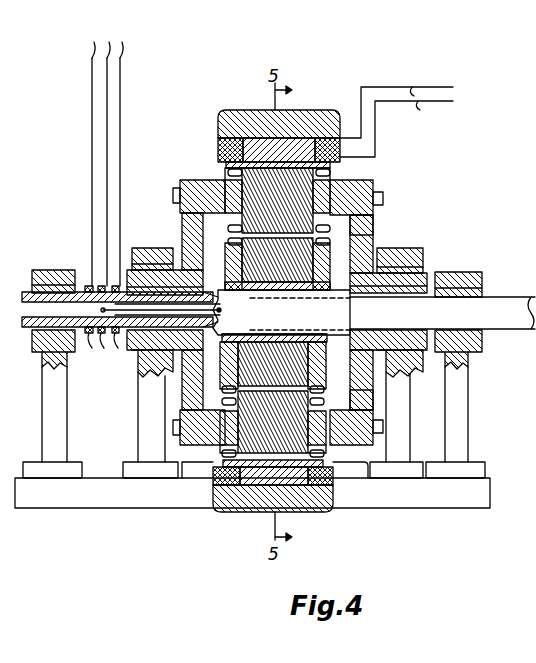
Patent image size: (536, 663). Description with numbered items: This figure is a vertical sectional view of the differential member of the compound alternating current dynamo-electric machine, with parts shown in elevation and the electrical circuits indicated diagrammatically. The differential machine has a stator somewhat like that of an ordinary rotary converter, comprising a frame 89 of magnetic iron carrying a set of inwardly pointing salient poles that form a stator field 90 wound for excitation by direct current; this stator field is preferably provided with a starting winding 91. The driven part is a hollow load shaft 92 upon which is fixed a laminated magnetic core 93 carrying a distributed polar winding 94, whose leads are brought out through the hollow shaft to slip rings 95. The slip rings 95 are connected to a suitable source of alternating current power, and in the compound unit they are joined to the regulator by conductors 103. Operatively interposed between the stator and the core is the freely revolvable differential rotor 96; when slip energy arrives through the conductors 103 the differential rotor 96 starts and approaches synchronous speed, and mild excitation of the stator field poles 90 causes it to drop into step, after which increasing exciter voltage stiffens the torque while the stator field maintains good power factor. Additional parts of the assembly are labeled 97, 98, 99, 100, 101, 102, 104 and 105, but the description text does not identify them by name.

The frame 89 is at (229, 112).
The stator field 90 is at (296, 140).
The starting winding 91 is at (228, 165).
The load shaft 92 is at (23, 292).
The laminated magnetic core 93 is at (300, 265).
The distributed polar winding 94 is at (352, 250).
The slip rings 95 is at (102, 326).
The differential rotor 96 is at (385, 203).
The frame member 97 is at (350, 188).
The frame member 98 is at (180, 210).
The support 99 is at (145, 385).
The coil 100 is at (338, 176).
The spacer 101 is at (352, 230).
The coil lead 102 is at (228, 172).
The conductors 103 is at (108, 152).
The conduits 104 is at (396, 107).
The insulator 105 is at (218, 146).